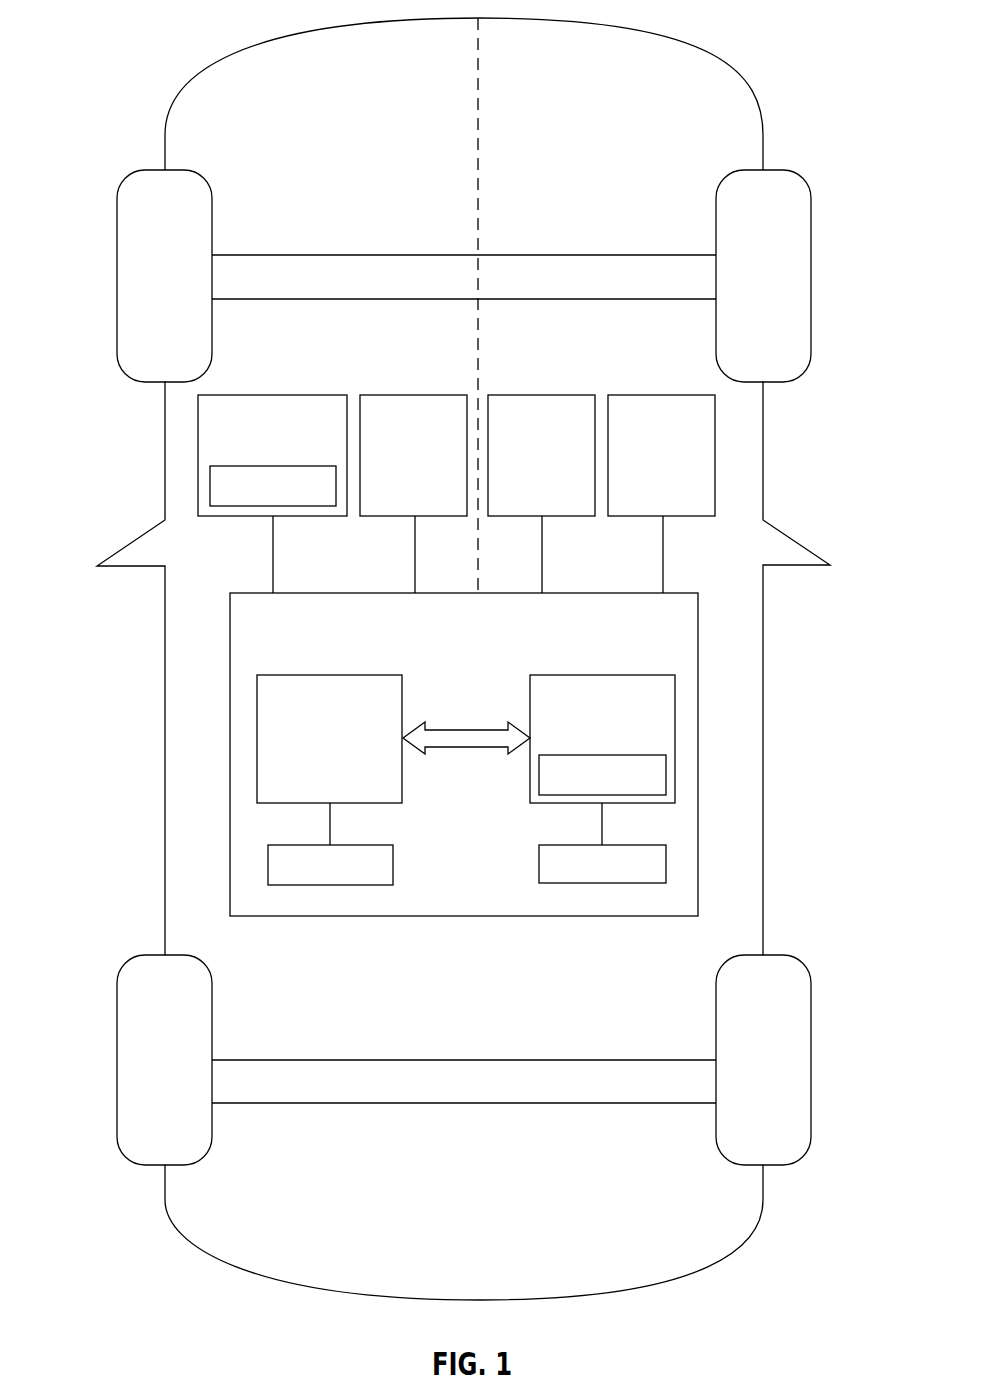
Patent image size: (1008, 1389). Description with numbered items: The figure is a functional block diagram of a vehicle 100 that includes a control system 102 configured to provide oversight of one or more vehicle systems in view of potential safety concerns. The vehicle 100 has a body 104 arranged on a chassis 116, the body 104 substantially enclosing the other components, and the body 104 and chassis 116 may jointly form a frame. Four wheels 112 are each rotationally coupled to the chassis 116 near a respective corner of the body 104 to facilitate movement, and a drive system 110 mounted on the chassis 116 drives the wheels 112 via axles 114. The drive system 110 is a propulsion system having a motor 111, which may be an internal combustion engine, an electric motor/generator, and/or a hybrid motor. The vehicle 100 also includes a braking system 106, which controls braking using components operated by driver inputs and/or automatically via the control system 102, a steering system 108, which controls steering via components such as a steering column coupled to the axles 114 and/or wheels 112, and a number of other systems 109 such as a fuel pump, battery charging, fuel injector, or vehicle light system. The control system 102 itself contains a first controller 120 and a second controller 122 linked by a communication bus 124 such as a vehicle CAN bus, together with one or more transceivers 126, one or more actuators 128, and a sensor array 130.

The vehicle 100 is at (456, 650).
The control system 102 is at (672, 593).
The body 104 is at (165, 677).
The braking system 106 is at (398, 395).
The steering system 108 is at (543, 395).
The other systems 109 is at (641, 395).
The drive system 110 is at (273, 395).
The motor 111 is at (297, 507).
The wheels 112 is at (117, 267).
The axles 114 is at (383, 275).
The chassis 116 is at (480, 142).
The first controller 120 is at (330, 673).
The second controller 122 is at (603, 675).
The communication bus 124 is at (465, 728).
The transceivers 126 is at (666, 773).
The actuators 128 is at (622, 845).
The sensor array 130 is at (312, 845).